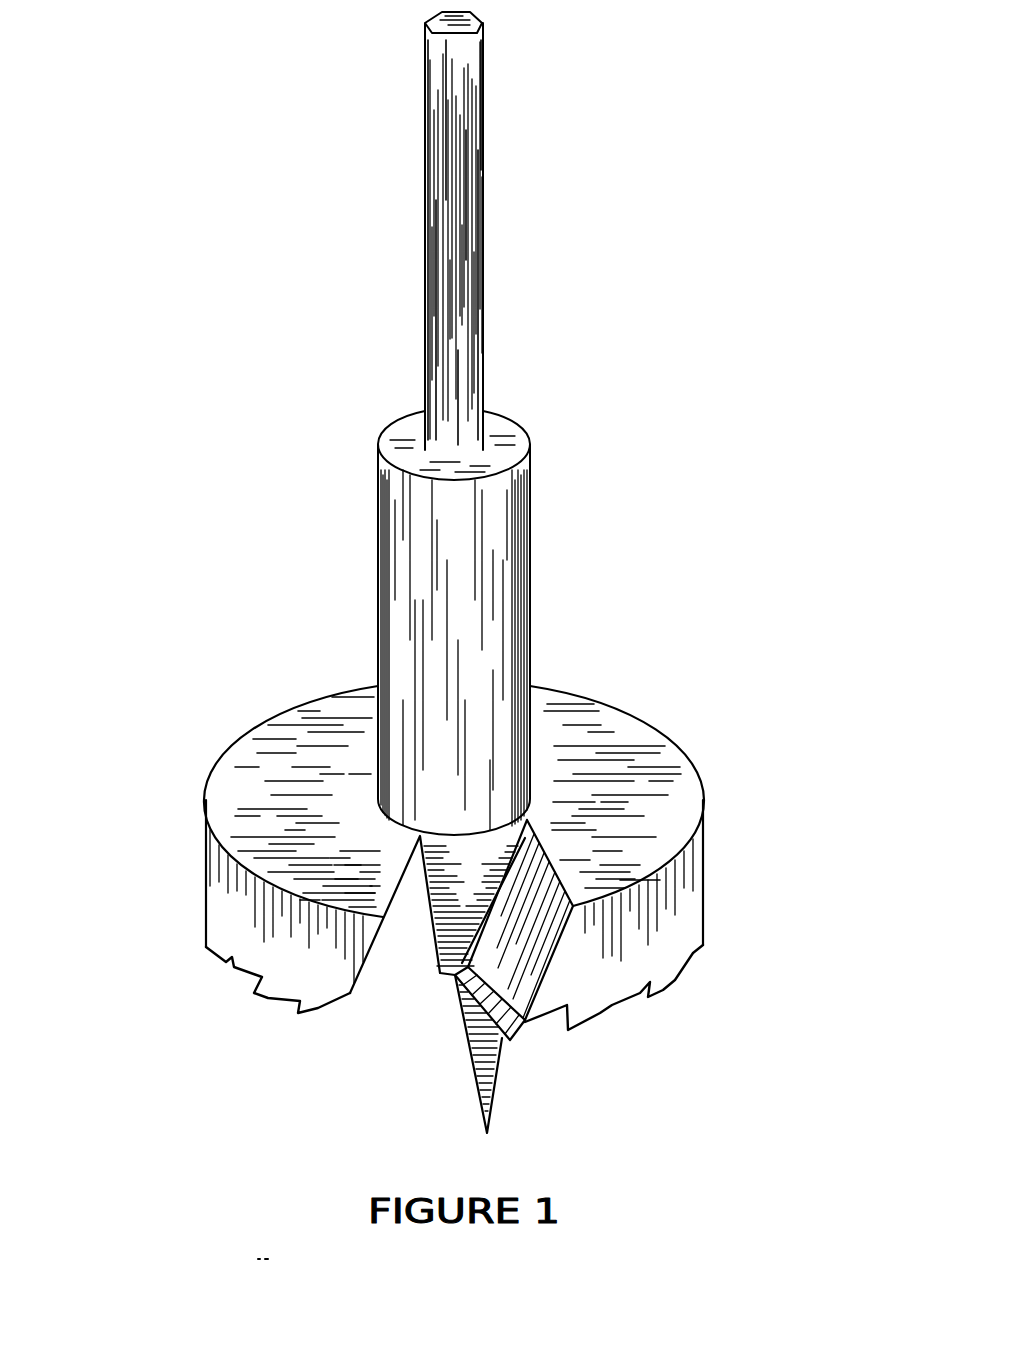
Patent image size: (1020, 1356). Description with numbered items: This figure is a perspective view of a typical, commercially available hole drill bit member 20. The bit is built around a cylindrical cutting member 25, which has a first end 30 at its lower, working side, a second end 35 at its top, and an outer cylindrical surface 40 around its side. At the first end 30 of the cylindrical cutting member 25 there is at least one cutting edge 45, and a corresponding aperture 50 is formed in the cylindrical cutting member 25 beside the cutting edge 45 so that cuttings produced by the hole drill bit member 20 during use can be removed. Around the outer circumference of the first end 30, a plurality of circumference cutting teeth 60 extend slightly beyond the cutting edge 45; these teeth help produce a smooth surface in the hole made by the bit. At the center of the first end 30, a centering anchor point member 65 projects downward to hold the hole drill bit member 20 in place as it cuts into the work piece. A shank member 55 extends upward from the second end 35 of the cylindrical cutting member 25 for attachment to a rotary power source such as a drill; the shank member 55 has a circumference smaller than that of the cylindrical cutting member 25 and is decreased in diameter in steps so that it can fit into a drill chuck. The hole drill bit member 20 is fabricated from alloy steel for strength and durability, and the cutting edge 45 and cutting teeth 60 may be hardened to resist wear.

The hole drill bit member 20 is at (725, 459).
The cylindrical cutting member 25 is at (491, 843).
The first end 30 is at (575, 962).
The second end 35 is at (602, 733).
The cylindrical surface 40 is at (228, 895).
The cutting edge 45 is at (462, 1010).
The aperture 50 is at (402, 973).
The shank member 55 is at (472, 290).
The circumference cutting teeth 60 is at (265, 997).
The centering anchor point member 65 is at (483, 1063).